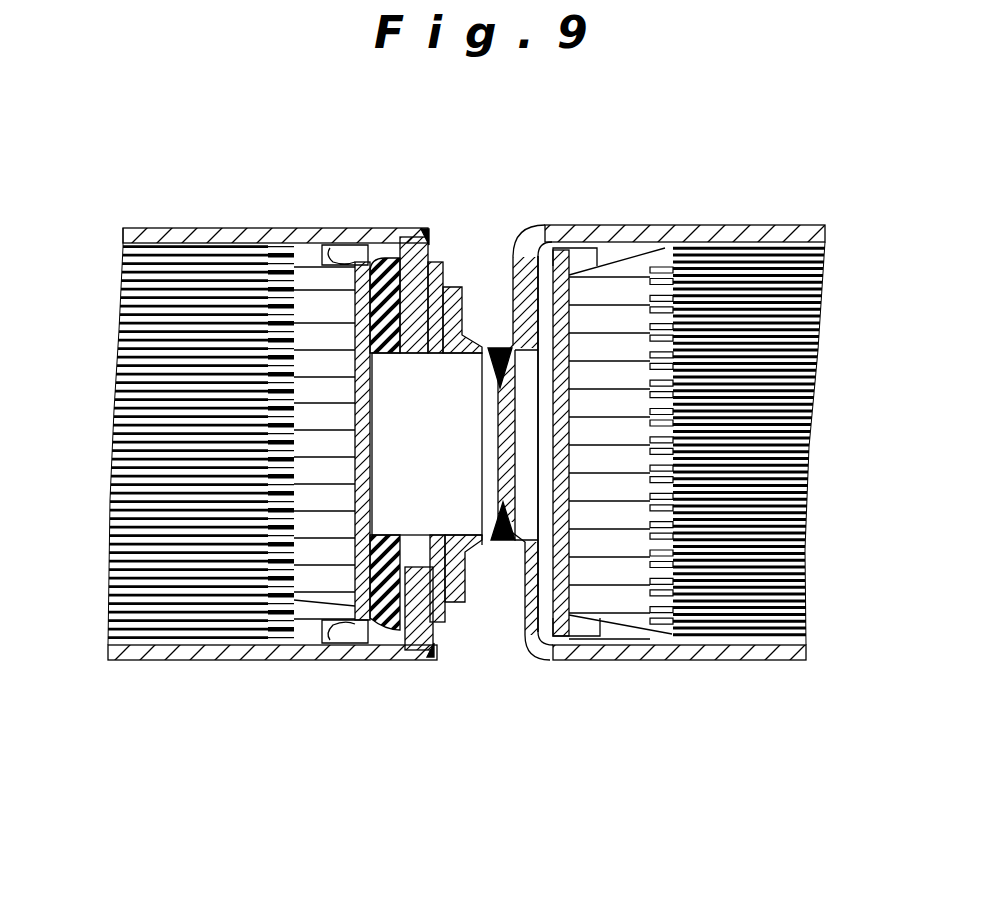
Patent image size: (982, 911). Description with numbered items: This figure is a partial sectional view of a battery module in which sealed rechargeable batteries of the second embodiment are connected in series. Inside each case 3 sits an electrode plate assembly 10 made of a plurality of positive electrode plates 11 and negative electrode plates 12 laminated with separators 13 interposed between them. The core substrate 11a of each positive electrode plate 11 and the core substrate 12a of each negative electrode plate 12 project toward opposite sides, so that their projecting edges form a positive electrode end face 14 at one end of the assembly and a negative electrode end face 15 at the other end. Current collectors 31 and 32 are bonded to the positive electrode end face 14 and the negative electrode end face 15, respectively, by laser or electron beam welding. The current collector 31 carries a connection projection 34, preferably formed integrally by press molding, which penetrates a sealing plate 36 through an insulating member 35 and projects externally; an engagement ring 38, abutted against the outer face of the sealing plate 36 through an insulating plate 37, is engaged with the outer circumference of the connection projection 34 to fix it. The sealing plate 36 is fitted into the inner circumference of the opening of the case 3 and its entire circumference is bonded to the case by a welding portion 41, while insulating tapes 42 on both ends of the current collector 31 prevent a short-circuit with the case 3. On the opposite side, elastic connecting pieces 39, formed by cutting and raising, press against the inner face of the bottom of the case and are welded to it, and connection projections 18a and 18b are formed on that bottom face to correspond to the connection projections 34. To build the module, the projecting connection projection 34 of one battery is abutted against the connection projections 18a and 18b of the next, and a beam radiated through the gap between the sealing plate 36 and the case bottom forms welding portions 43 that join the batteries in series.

The case 3 is at (178, 662).
The electrode plate assembly 10 is at (466, 455).
The positive electrode plate 11 is at (208, 262).
The negative electrode plate 12 is at (163, 255).
The separator 13 is at (526, 455).
The positive electrode end face 14 is at (350, 560).
The core substrate 11a is at (330, 592).
The core substrate 12a is at (628, 615).
The negative electrode end face 15 is at (512, 447).
The connection projection 18a is at (712, 502).
The connection projection 18b is at (575, 452).
The current collector 31 is at (333, 443).
The current collector 32 is at (601, 458).
The connection projection 34 is at (432, 472).
The insulating member 35 is at (387, 617).
The sealing plate 36 is at (417, 625).
The insulating plate 37 is at (452, 622).
The engagement ring 38 is at (467, 600).
The elastic connecting piece 39 is at (472, 540).
The welding portion 41 is at (438, 660).
The insulating tape 42 is at (360, 625).
The welding portion 43 is at (500, 345).